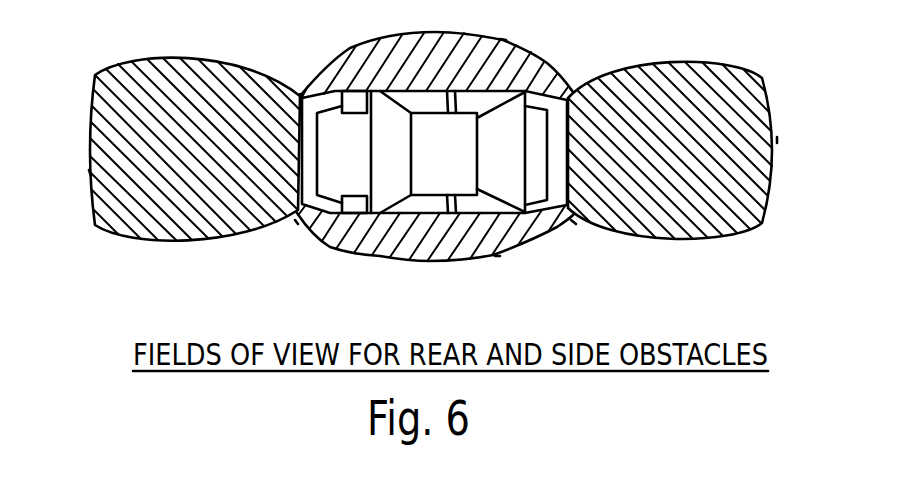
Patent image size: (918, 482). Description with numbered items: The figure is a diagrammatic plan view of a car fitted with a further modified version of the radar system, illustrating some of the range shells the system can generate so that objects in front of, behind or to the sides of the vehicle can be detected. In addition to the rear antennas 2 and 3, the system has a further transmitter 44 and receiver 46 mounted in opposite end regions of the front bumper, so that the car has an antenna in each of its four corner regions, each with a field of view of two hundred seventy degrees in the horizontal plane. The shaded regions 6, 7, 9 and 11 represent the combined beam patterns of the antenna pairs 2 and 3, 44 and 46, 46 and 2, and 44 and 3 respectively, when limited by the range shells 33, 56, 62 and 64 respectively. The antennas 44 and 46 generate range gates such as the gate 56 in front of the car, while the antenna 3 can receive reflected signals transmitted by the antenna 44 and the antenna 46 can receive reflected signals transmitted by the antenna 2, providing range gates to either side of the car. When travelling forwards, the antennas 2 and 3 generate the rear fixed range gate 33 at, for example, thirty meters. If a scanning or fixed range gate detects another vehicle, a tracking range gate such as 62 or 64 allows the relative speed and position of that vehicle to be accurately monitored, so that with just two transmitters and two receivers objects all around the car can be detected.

The antenna 2 is at (574, 90).
The antenna 3 is at (574, 222).
The shaded region 6 is at (686, 174).
The shaded region 7 is at (206, 168).
The shaded region 9 is at (441, 79).
The shaded region 11 is at (447, 250).
The rear fixed range gate 33 is at (777, 140).
The transmitter 44 is at (296, 222).
The receiver 46 is at (302, 97).
The range gate 56 is at (90, 173).
The tracking range gate 62 is at (503, 38).
The tracking range gate 64 is at (497, 257).